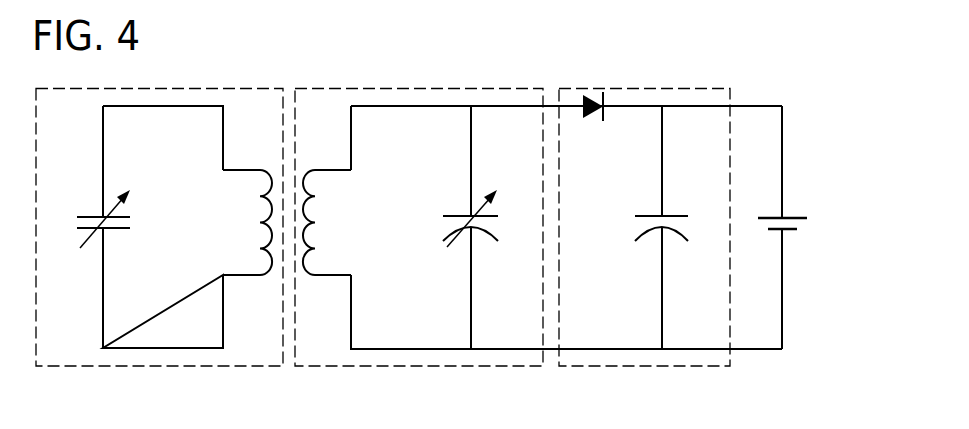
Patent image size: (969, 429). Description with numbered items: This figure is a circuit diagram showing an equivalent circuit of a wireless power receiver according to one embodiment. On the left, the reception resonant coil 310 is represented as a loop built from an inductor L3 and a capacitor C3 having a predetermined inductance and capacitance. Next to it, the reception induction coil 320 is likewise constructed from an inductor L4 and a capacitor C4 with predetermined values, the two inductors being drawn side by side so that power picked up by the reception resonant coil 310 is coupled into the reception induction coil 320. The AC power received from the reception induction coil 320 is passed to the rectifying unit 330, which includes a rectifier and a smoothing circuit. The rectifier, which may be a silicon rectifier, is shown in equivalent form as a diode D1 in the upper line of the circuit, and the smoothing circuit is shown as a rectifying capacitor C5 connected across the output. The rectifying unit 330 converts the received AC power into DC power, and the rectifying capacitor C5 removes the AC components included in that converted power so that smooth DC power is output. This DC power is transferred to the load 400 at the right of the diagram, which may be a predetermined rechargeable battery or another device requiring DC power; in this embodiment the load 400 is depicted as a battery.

The reception resonant coil 310 is at (191, 87).
The reception induction coil 320 is at (444, 87).
The rectifying unit 330 is at (664, 87).
The load 400 is at (800, 198).
The capacitor C3 is at (87, 227).
The inductor L3 is at (247, 222).
The inductor L4 is at (330, 222).
The capacitor C4 is at (487, 227).
The diode D1 is at (592, 88).
The rectifying capacitor C5 is at (678, 227).